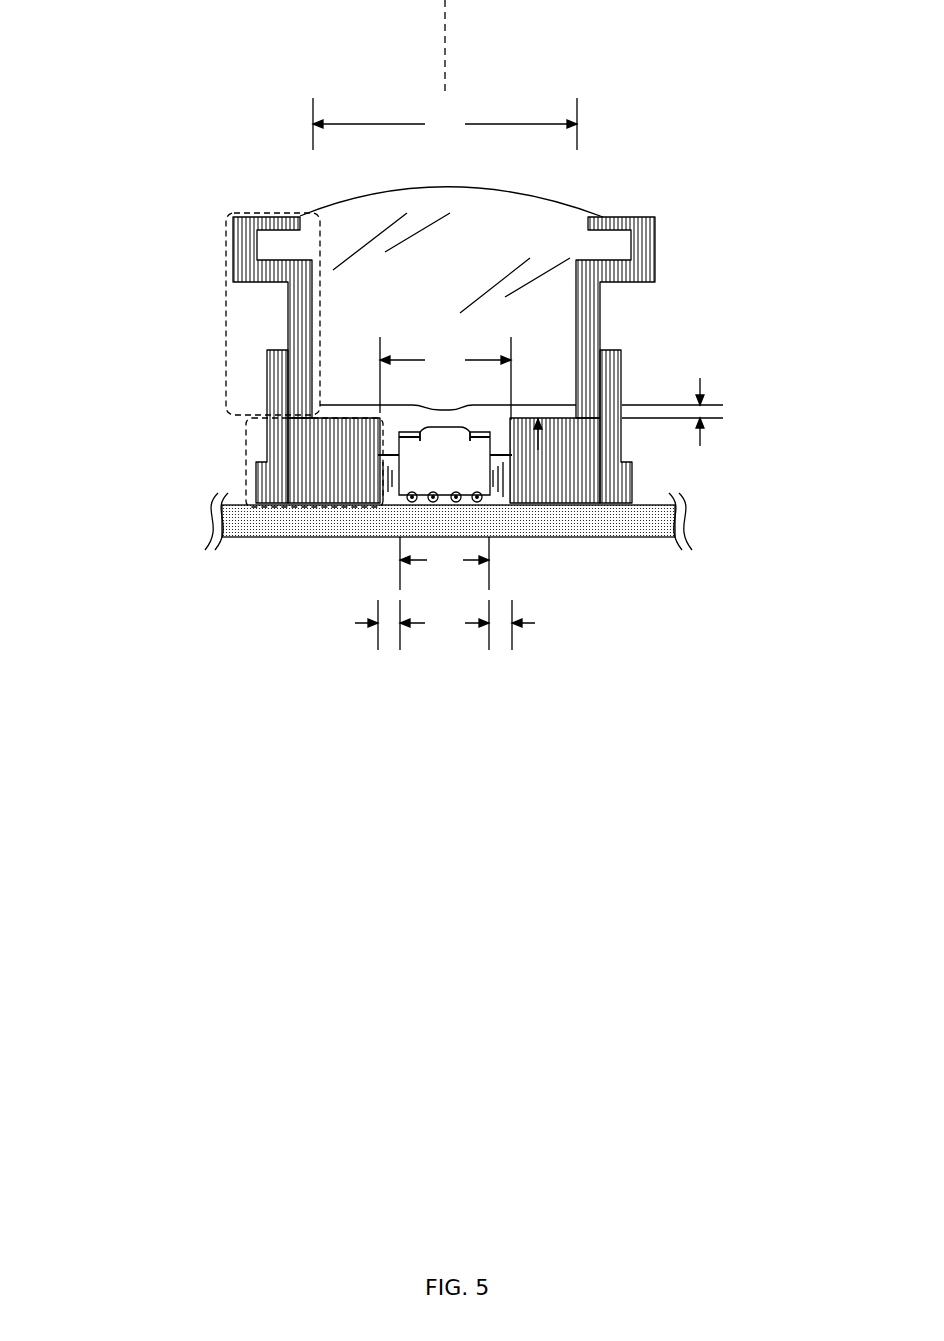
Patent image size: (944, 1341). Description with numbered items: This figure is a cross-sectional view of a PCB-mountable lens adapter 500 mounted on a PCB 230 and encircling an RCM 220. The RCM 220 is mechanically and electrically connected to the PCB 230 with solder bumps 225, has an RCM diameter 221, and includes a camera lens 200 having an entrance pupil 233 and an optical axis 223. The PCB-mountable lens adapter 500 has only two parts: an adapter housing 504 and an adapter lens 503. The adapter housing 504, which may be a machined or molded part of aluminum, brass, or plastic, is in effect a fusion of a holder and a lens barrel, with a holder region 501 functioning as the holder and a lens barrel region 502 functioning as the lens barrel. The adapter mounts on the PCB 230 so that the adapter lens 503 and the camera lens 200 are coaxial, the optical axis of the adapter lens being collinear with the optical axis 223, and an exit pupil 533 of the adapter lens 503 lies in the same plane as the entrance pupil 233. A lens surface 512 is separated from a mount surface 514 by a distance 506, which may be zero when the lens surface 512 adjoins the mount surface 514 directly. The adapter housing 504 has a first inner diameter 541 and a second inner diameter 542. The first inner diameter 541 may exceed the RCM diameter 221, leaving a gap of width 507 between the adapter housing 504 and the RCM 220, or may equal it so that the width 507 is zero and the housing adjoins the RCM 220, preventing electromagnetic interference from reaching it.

The PCB-mountable lens adapter 500 is at (117, 183).
The optical axis 223 is at (528, 46).
The second inner diameter 542 is at (445, 124).
The lens barrel region 502 is at (225, 298).
The adapter housing 504 is at (655, 243).
The adapter lens 503 is at (429, 293).
The holder region 501 is at (245, 448).
The lens surface 512 is at (567, 404).
The distance 506 is at (700, 424).
The mount surface 514 is at (538, 448).
The first inner diameter 541 is at (445, 378).
The camera lens 200 is at (380, 478).
The entrance pupil 233 is at (444, 461).
The exit pupil 533 is at (405, 441).
The RCM 220 is at (486, 490).
The solder bumps 225 is at (388, 500).
The PCB 230 is at (489, 529).
The RCM diameter 221 is at (444, 563).
The width 507 is at (389, 651).